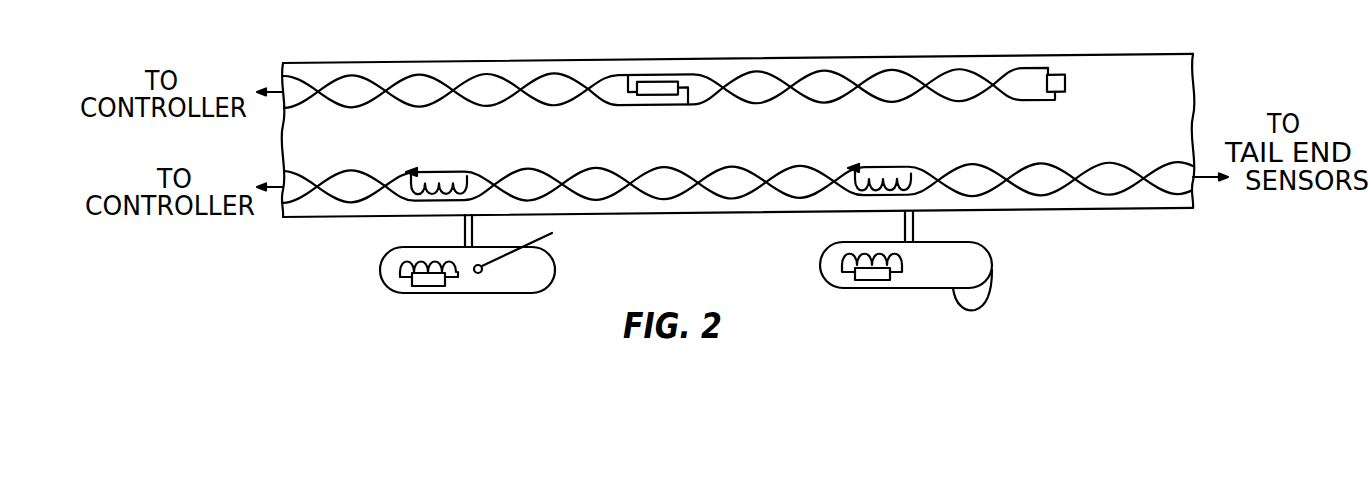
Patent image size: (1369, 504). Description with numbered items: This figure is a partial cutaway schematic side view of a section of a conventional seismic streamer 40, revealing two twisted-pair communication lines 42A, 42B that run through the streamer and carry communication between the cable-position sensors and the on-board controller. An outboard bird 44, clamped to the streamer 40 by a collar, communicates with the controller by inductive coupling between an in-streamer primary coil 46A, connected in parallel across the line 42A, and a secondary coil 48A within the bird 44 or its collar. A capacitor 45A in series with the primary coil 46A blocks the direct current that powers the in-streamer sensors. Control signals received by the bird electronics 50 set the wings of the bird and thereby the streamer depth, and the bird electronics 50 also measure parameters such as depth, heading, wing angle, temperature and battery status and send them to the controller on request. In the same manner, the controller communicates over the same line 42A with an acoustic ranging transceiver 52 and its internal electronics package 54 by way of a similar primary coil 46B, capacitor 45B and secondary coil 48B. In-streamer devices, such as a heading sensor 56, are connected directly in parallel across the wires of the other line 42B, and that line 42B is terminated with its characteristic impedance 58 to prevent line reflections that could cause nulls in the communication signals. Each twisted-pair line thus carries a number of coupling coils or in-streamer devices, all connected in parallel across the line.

The streamer 40 is at (1017, 137).
The twisted-pair line 42A is at (305, 173).
The twisted-pair line 42B is at (490, 107).
The outboard bird 44 is at (436, 277).
The capacitor 45A is at (448, 153).
The capacitor 45B is at (868, 148).
The in-streamer primary coil 46A is at (443, 185).
The primary coil 46B is at (890, 191).
The secondary coil 48A is at (400, 272).
The secondary coil 48B is at (842, 265).
The bird electronics 50 is at (428, 286).
The acoustic ranging transceiver 52 is at (900, 271).
The internal electronics package 54 is at (865, 280).
The heading sensor 56 is at (657, 96).
The characteristic impedance 58 is at (1065, 82).